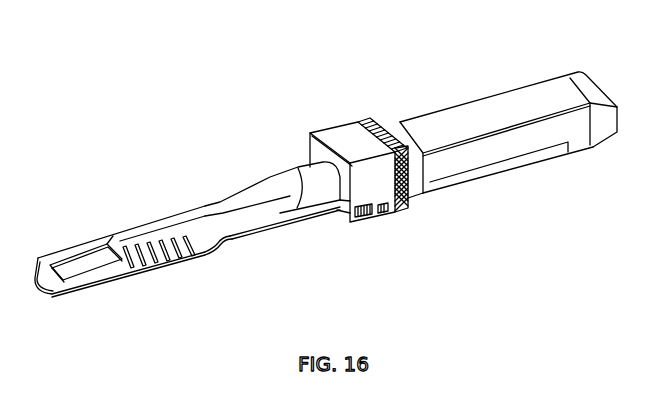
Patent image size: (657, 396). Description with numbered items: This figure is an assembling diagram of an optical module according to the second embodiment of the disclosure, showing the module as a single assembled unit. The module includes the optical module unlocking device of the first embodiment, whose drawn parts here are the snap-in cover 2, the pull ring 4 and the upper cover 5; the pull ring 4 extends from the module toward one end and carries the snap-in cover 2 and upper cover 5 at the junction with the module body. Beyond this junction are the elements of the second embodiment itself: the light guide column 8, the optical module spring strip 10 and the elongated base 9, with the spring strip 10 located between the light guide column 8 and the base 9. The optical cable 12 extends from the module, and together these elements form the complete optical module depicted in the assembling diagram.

The snap-in cover 2 is at (374, 217).
The pull ring 4 is at (223, 230).
The upper cover 5 is at (454, 187).
The light guide column 8 is at (346, 162).
The base 9 is at (459, 124).
The optical module spring strip 10 is at (387, 134).
The optical cable 12 is at (195, 215).